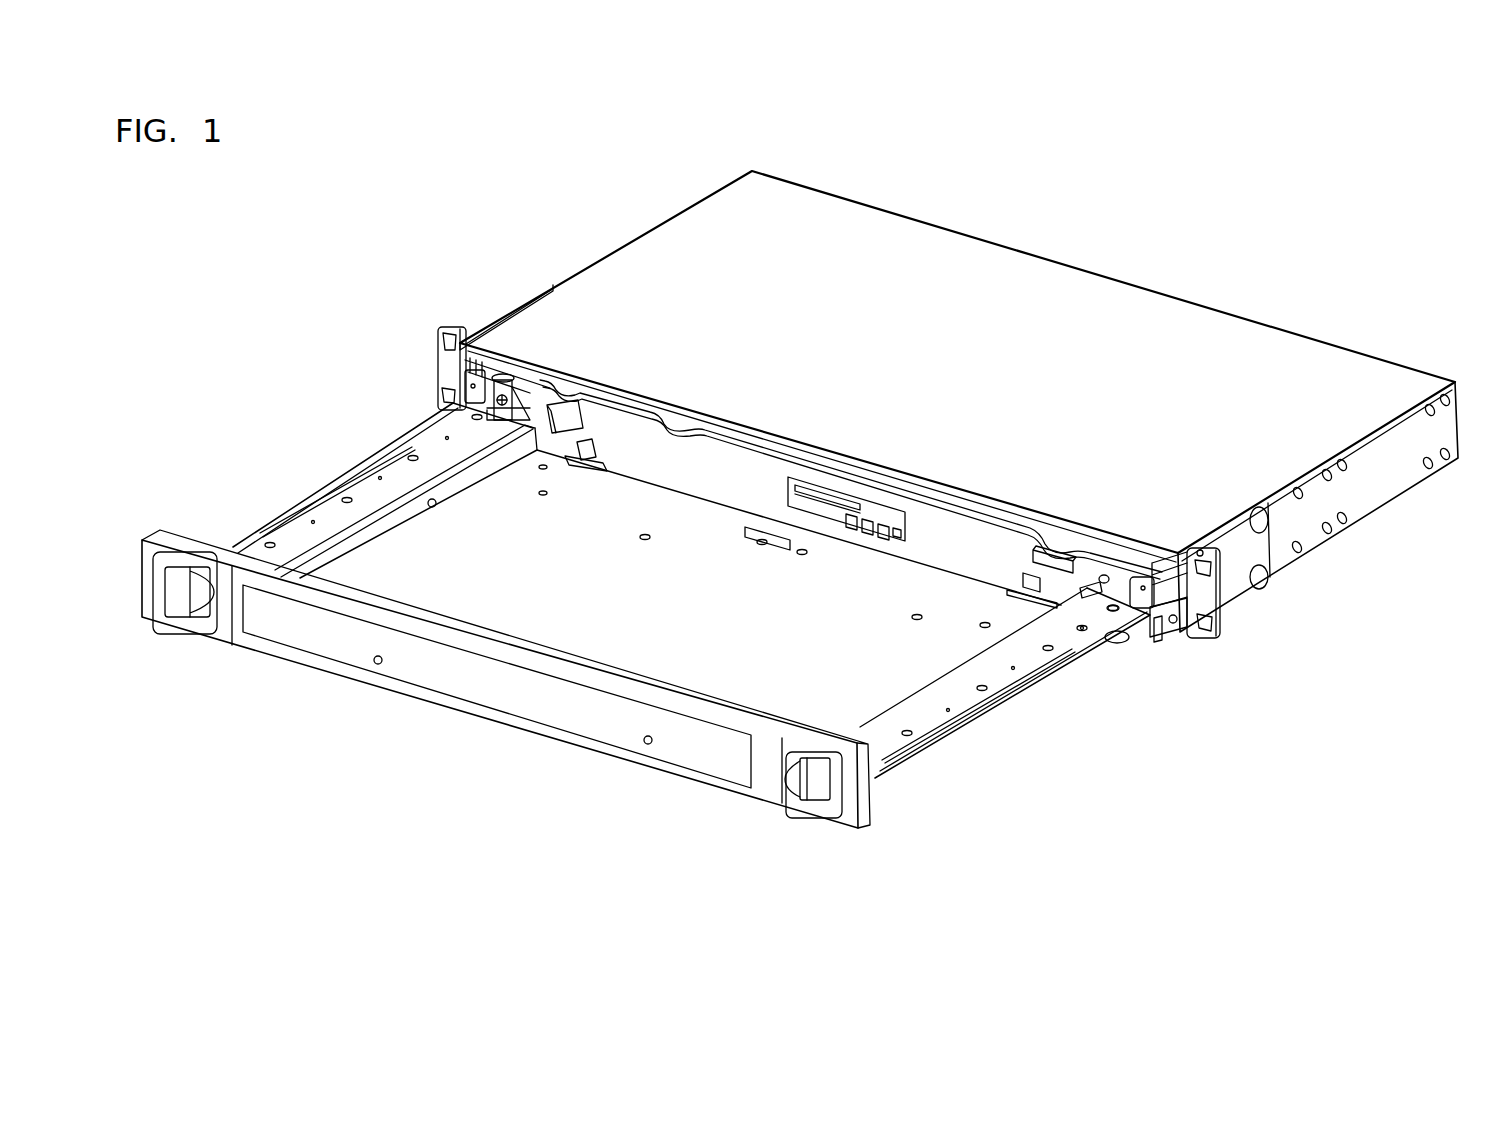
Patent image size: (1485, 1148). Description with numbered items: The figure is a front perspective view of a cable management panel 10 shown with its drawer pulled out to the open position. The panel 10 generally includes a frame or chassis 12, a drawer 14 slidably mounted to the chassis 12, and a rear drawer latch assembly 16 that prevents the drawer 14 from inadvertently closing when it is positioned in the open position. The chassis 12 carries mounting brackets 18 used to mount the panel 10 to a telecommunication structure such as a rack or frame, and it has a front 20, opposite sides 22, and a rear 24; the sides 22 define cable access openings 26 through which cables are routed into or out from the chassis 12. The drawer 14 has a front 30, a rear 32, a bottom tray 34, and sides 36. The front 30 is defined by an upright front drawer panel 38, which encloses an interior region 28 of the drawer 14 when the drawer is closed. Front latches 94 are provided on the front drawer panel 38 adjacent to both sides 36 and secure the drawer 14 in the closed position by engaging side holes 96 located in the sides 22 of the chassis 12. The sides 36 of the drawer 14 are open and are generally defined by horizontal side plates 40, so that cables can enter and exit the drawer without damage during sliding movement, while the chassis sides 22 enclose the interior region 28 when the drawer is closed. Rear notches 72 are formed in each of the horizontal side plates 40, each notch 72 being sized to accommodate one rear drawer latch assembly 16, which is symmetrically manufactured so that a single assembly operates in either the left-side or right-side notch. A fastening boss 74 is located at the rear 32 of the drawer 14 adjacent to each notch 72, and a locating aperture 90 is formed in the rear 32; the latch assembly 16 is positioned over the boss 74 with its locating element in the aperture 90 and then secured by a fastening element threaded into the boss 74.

The cable management panel 10 is at (400, 230).
The chassis 12 is at (623, 230).
The drawer 14 is at (240, 503).
The rear drawer latch assembly 16 is at (527, 393).
The mounting brackets 18 is at (450, 363).
The front 20 is at (712, 440).
The sides 22 is at (578, 276).
The rear 24 is at (1020, 248).
The cable access openings 26 is at (438, 378).
The interior region 28 is at (620, 608).
The front 30 is at (553, 708).
The rear 32 is at (935, 548).
The bottom tray 34 is at (707, 548).
The sides 36 is at (332, 490).
The upright front drawer panel 38 is at (417, 668).
The horizontal side plates 40 is at (420, 442).
The rear notches 72 is at (512, 427).
The fastening boss 74 is at (1102, 575).
The locating aperture 90 is at (1114, 605).
The front latches 94 is at (182, 618).
The side holes 96 is at (1158, 632).